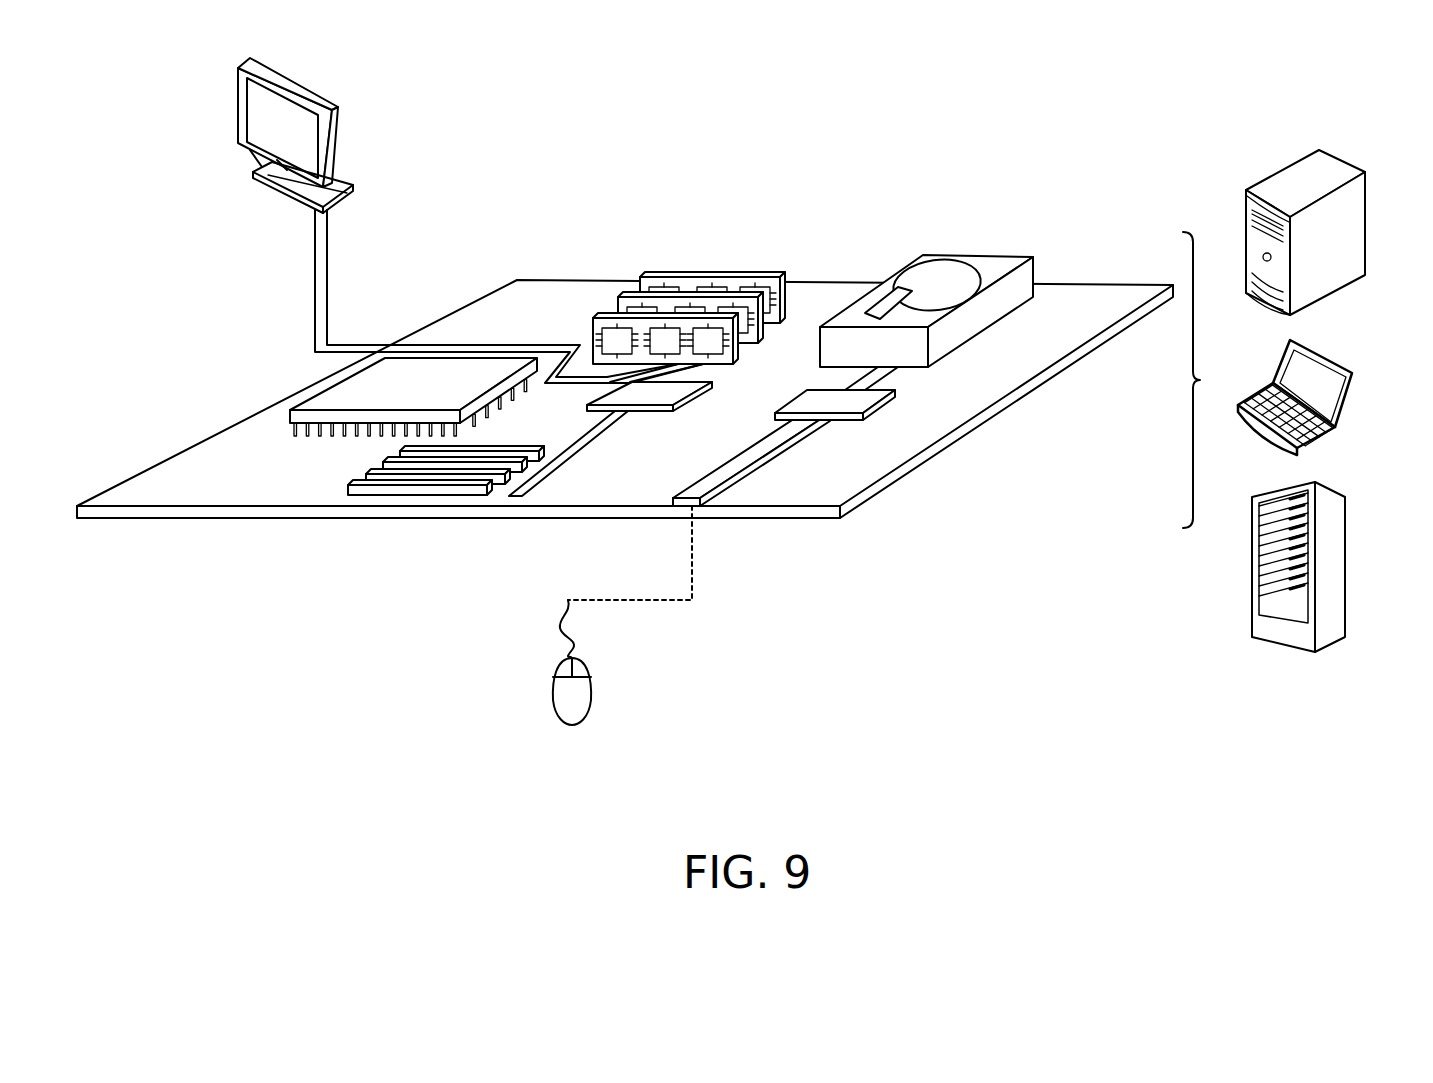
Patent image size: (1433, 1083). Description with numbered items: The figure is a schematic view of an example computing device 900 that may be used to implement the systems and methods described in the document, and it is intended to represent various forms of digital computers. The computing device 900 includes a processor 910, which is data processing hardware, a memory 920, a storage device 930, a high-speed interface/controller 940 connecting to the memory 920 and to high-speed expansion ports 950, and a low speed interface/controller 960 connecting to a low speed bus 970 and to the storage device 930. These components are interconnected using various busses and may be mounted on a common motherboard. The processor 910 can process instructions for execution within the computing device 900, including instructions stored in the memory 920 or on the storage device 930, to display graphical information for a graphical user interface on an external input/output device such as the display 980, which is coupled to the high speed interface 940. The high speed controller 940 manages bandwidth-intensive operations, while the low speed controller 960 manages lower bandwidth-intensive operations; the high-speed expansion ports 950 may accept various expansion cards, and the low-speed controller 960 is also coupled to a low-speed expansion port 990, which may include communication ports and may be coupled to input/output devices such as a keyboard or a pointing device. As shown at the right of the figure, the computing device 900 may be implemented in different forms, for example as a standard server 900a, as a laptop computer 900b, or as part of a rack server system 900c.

The computing device 900 is at (792, 128).
The standard server 900a is at (1278, 170).
The laptop computer 900b is at (1333, 355).
The rack server system 900c is at (1338, 548).
The processor 910 is at (292, 413).
The memory 920 is at (708, 275).
The storage device 930 is at (975, 255).
The high-speed interface/controller 940 is at (665, 415).
The high-speed expansion ports 950 is at (348, 488).
The low speed interface/controller 960 is at (800, 400).
The low speed bus 970 is at (788, 462).
The display 980 is at (238, 110).
The low-speed expansion port 990 is at (706, 508).